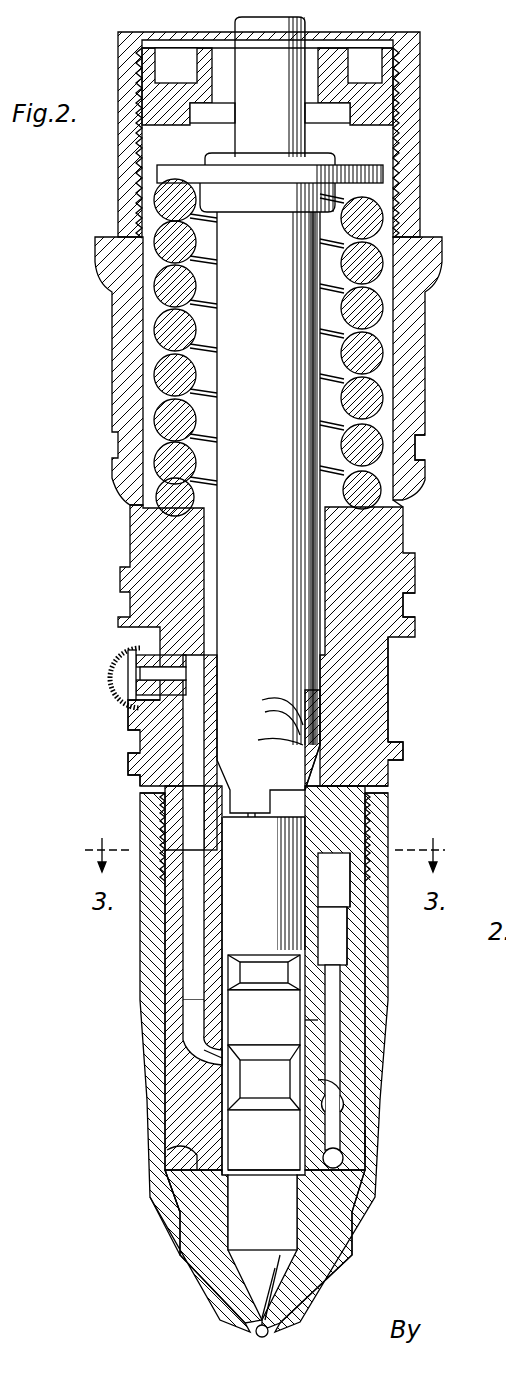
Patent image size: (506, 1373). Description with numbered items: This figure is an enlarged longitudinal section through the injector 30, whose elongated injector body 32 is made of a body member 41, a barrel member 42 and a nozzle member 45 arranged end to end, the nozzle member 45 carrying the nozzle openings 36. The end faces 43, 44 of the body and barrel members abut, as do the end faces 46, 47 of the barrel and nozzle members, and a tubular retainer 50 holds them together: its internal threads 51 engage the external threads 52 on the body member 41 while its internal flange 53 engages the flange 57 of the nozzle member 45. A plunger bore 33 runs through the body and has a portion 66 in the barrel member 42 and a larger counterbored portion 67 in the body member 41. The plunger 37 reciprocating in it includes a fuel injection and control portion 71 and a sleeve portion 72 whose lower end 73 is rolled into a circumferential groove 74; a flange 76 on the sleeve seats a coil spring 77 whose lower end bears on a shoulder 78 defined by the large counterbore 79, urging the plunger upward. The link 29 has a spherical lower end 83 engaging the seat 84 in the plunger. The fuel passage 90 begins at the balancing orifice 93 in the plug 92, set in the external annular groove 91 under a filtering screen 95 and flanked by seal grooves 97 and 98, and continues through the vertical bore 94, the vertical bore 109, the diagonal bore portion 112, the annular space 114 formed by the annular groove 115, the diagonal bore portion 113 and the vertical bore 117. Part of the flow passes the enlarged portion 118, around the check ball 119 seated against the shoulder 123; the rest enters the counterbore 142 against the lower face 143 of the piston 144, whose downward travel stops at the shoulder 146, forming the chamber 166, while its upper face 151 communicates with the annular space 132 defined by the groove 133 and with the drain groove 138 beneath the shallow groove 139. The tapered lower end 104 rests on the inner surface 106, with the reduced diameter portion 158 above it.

The link 29 is at (282, 90).
The injector 30 is at (452, 140).
The flange 76 is at (368, 175).
The coil spring 77 is at (165, 330).
The large counterbore 79 is at (145, 398).
The injector body 32 is at (428, 372).
The shallow groove 139 is at (417, 452).
The body member 41 is at (148, 530).
The sleeve portion 72 is at (285, 532).
The shoulder 78 is at (390, 504).
The groove 138 is at (405, 530).
The smaller groove 98 is at (408, 607).
The balancing orifice 93 is at (132, 657).
The filtering screen 95 is at (135, 676).
The plug 92 is at (130, 695).
The lower end of link 83 is at (292, 712).
The seat 84 is at (268, 724).
The external annular groove 91 is at (390, 672).
The vertical bore 94 is at (130, 742).
The fuel passage 90 is at (178, 768).
The smaller groove 97 is at (405, 758).
The plunger 37 is at (330, 784).
The internal threads 51 is at (165, 800).
The end face of body member 43 is at (150, 855).
The external threads 52 is at (378, 803).
The end face of barrel member 44 is at (357, 848).
The bore portion 67 is at (204, 878).
The lower end of sleeve portion 73 is at (300, 820).
The circumferential groove 74 is at (318, 840).
The upper face of piston 151 is at (275, 883).
The piston 144 is at (351, 892).
The vertical bore 109 is at (155, 940).
The plunger bore 33 is at (226, 942).
The lower face of piston 143 is at (352, 915).
The counterbore 142 is at (345, 950).
The chamber 166 is at (346, 962).
The tubular retainer 50 is at (240, 968).
The groove 133 is at (230, 990).
The annular space 132 is at (264, 1017).
The shoulder 146 is at (345, 1010).
The fuel injection and control portion 71 is at (312, 1027).
The diagonal bore portion 112 is at (165, 1060).
The annular space 114 is at (228, 1077).
The annular groove 115 is at (264, 1077).
The diagonal bore portion 113 is at (338, 1080).
The vertical bore 117 is at (342, 1100).
The barrel member 42 is at (178, 1113).
The end face of nozzle member 47 is at (190, 1160).
The bore portion 66 is at (226, 1142).
The enlarged bore portion 118 is at (322, 1155).
The shoulder 123 is at (378, 1145).
The check ball 119 is at (343, 1160).
The end face of barrel member 46 is at (165, 1190).
The flange 57 is at (350, 1192).
The internal flange 53 is at (175, 1235).
The reduced diameter portion 158 is at (280, 1229).
The nozzle member 45 is at (210, 1280).
The tapered lower end 104 is at (285, 1275).
The inner surface 106 is at (295, 1300).
The nozzle openings 36 is at (255, 1332).